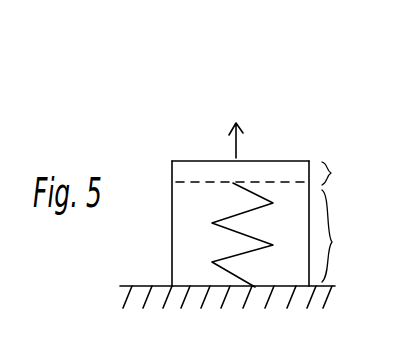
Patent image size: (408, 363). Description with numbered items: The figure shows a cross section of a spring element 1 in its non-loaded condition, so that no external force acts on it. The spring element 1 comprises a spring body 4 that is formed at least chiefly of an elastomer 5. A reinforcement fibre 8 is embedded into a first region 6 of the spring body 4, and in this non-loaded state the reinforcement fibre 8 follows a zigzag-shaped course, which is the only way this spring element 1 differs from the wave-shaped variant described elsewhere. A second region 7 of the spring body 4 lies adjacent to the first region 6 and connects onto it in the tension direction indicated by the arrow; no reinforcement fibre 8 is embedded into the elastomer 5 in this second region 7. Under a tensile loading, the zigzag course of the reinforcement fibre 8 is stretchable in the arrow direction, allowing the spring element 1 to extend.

The spring element 1 is at (192, 138).
The spring body 4 is at (172, 212).
The elastomer 5 is at (291, 203).
The first region 6 is at (337, 236).
The second region 7 is at (337, 169).
The reinforcement fibre 8 is at (214, 266).